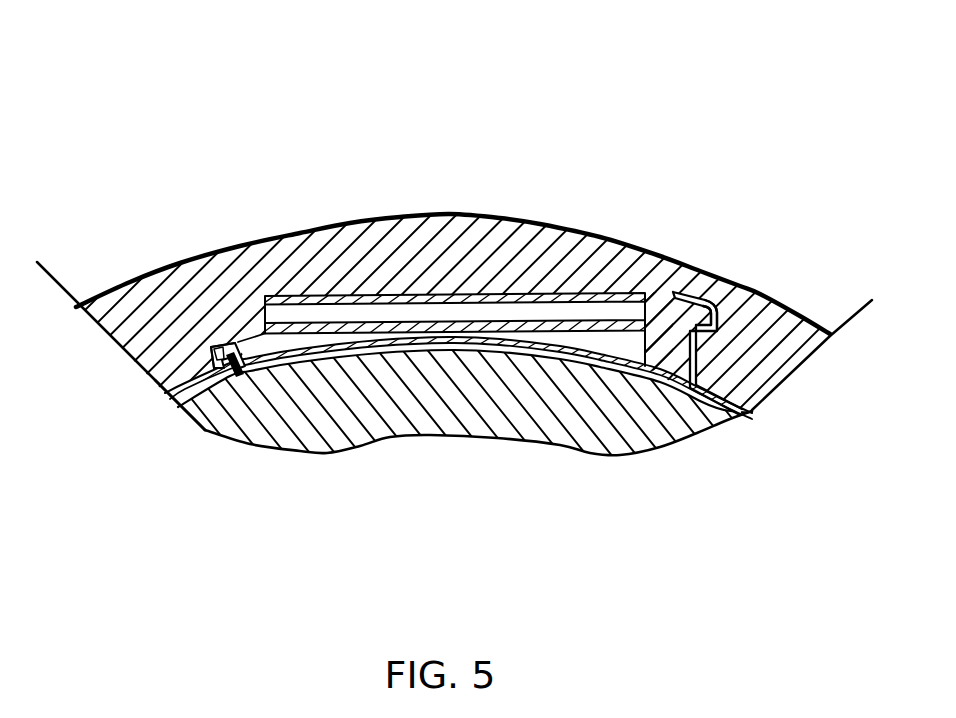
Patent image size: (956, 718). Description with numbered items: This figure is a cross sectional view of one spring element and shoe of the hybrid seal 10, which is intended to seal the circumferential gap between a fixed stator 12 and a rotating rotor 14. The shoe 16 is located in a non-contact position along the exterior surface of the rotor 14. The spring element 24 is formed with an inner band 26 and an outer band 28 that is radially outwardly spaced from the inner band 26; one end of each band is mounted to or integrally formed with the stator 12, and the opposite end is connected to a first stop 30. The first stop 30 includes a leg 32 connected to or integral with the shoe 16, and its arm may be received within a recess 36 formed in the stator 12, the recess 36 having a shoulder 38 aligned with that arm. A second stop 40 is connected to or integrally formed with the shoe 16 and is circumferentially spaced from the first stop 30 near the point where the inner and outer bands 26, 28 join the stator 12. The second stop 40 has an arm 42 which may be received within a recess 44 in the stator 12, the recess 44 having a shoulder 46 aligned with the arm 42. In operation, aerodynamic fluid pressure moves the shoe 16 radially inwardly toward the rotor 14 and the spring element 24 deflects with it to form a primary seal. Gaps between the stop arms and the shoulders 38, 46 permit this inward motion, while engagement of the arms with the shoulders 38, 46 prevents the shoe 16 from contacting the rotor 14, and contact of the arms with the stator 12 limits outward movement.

The hybrid seal 10 is at (212, 120).
The stator 12 is at (137, 300).
The rotor 14 is at (600, 437).
The shoe 16 is at (187, 400).
The spring element 24 is at (612, 276).
The inner band 26 is at (327, 336).
The outer band 28 is at (470, 293).
The first stop 30 is at (675, 294).
The leg 32 is at (663, 362).
The recess 36 is at (718, 317).
The shoulder 38 is at (713, 338).
The second stop 40 is at (226, 378).
The arm 42 is at (222, 346).
The recess 44 is at (211, 353).
The shoulder 46 is at (221, 381).